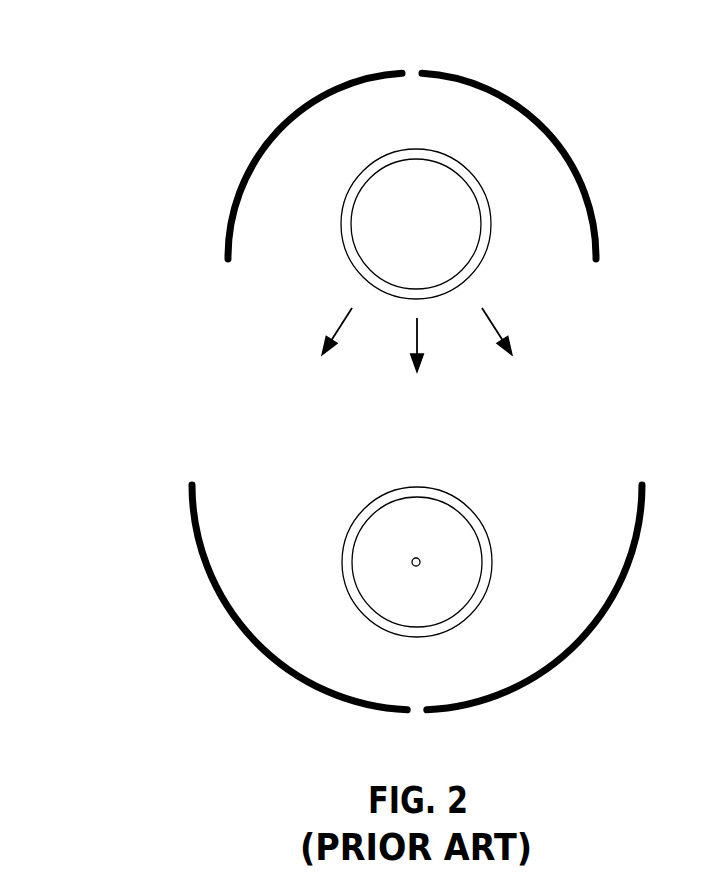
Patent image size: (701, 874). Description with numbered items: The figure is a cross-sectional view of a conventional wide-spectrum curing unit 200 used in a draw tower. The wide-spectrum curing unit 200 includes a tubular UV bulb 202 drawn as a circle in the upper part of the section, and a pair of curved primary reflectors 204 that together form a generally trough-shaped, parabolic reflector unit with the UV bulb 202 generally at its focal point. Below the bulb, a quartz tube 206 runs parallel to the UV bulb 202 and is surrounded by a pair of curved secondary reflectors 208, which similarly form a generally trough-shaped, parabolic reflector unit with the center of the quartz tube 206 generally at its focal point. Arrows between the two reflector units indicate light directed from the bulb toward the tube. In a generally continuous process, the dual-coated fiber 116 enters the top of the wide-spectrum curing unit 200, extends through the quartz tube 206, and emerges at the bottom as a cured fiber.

The wide-spectrum curing unit 200 is at (121, 65).
The tubular UV bulb 202 is at (342, 225).
The curved primary reflectors 204 is at (352, 82).
The quartz tube 206 is at (343, 560).
The curved secondary reflectors 208 is at (358, 707).
The dual-coated fiber 116 is at (419, 558).